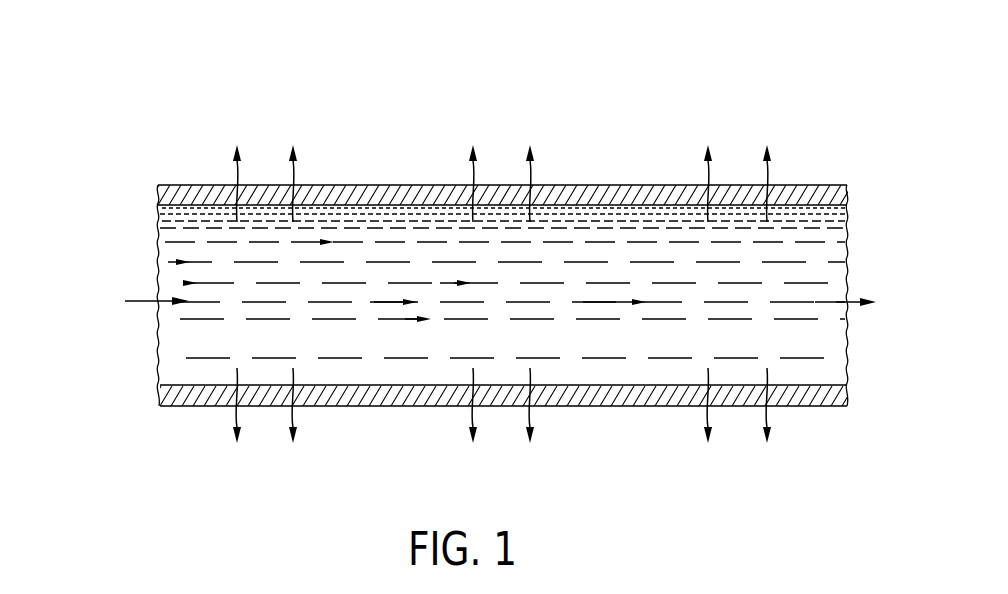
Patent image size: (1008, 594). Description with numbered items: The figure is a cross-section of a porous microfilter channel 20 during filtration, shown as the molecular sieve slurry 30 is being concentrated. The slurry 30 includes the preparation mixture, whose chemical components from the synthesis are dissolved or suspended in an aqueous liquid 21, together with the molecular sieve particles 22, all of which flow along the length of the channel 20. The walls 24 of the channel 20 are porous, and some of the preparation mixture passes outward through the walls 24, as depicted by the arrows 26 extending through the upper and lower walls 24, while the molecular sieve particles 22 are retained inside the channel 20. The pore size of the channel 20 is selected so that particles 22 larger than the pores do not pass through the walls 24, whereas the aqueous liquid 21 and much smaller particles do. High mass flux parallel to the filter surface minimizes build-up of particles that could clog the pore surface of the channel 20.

The porous microfilter channel 20 is at (808, 97).
The aqueous liquid 21 is at (128, 320).
The molecular sieve particles 22 is at (215, 234).
The walls 24 is at (159, 197).
The arrows 26 is at (235, 162).
The molecular sieve slurry 30 is at (530, 305).